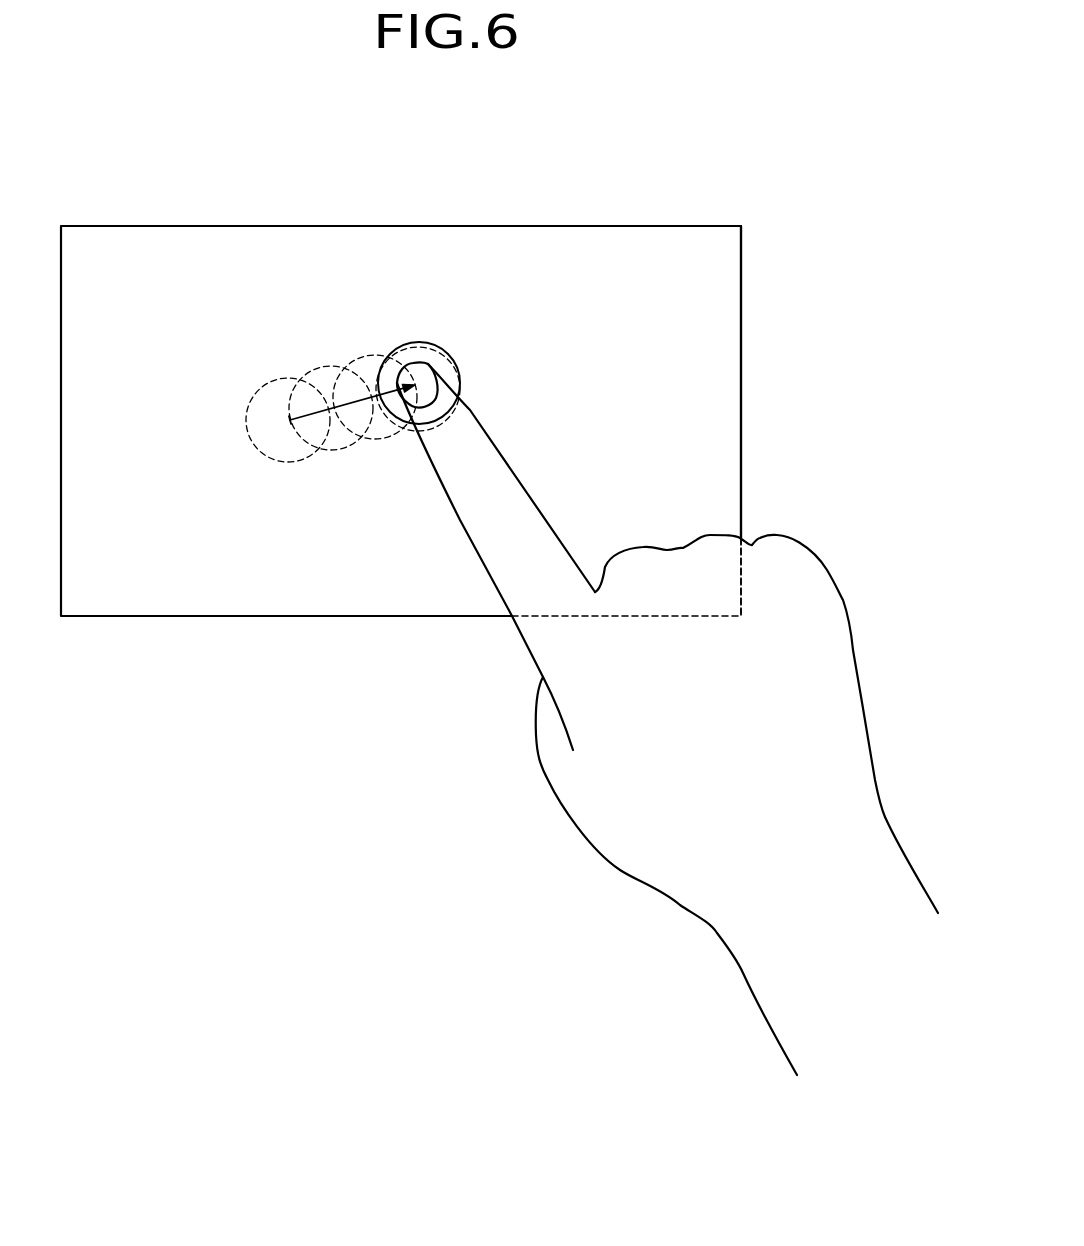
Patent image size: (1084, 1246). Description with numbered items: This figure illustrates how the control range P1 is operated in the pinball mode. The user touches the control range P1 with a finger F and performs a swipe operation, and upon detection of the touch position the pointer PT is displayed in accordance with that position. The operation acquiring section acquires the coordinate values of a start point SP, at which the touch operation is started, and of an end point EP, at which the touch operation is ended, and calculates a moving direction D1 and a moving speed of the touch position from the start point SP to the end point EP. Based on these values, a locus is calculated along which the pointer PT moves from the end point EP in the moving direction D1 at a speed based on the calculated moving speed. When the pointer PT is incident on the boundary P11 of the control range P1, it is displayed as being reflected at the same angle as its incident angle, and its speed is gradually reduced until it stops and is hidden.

The control range P1 is at (682, 183).
The boundary P11 is at (741, 366).
The start point SP is at (258, 452).
The moving direction D1 is at (363, 432).
The end point EP is at (423, 345).
The pointer PT is at (437, 363).
The finger F is at (475, 452).